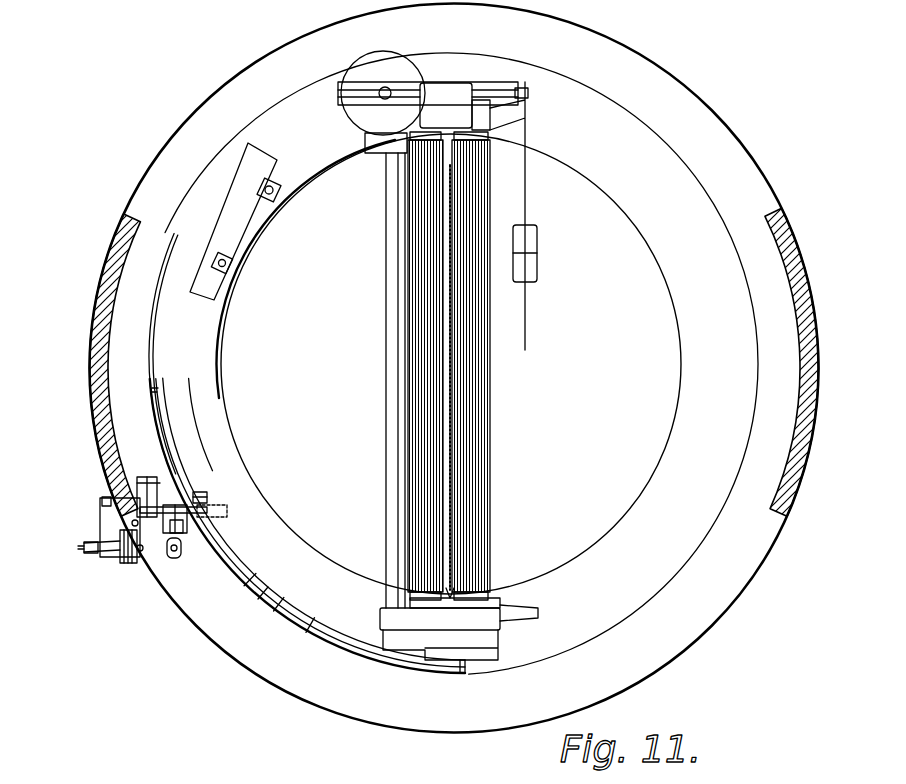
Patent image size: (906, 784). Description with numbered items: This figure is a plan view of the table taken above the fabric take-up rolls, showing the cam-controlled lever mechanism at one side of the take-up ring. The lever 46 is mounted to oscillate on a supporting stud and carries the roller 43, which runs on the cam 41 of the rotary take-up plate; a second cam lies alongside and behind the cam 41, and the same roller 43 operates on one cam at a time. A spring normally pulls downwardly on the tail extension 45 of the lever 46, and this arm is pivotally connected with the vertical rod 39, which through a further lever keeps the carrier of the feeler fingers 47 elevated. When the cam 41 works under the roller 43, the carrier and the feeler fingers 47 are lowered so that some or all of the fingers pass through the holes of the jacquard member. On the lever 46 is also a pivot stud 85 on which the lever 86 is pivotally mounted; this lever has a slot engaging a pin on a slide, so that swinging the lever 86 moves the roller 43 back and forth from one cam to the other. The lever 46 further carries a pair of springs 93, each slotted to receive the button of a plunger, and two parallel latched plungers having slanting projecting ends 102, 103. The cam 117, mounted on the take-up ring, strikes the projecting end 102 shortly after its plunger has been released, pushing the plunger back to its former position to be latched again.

The cam 117 is at (238, 198).
The lever 86 is at (140, 502).
The vertical rod 39 is at (106, 498).
The tail extension 45 is at (112, 519).
The springs 93 is at (107, 560).
The pivot stud 85 is at (174, 560).
The roller 43 is at (163, 464).
The lever 46 is at (162, 496).
The projecting end 103 is at (198, 503).
The projecting end 102 is at (217, 511).
The feeler fingers 47 is at (261, 601).
The cam 41 is at (280, 620).